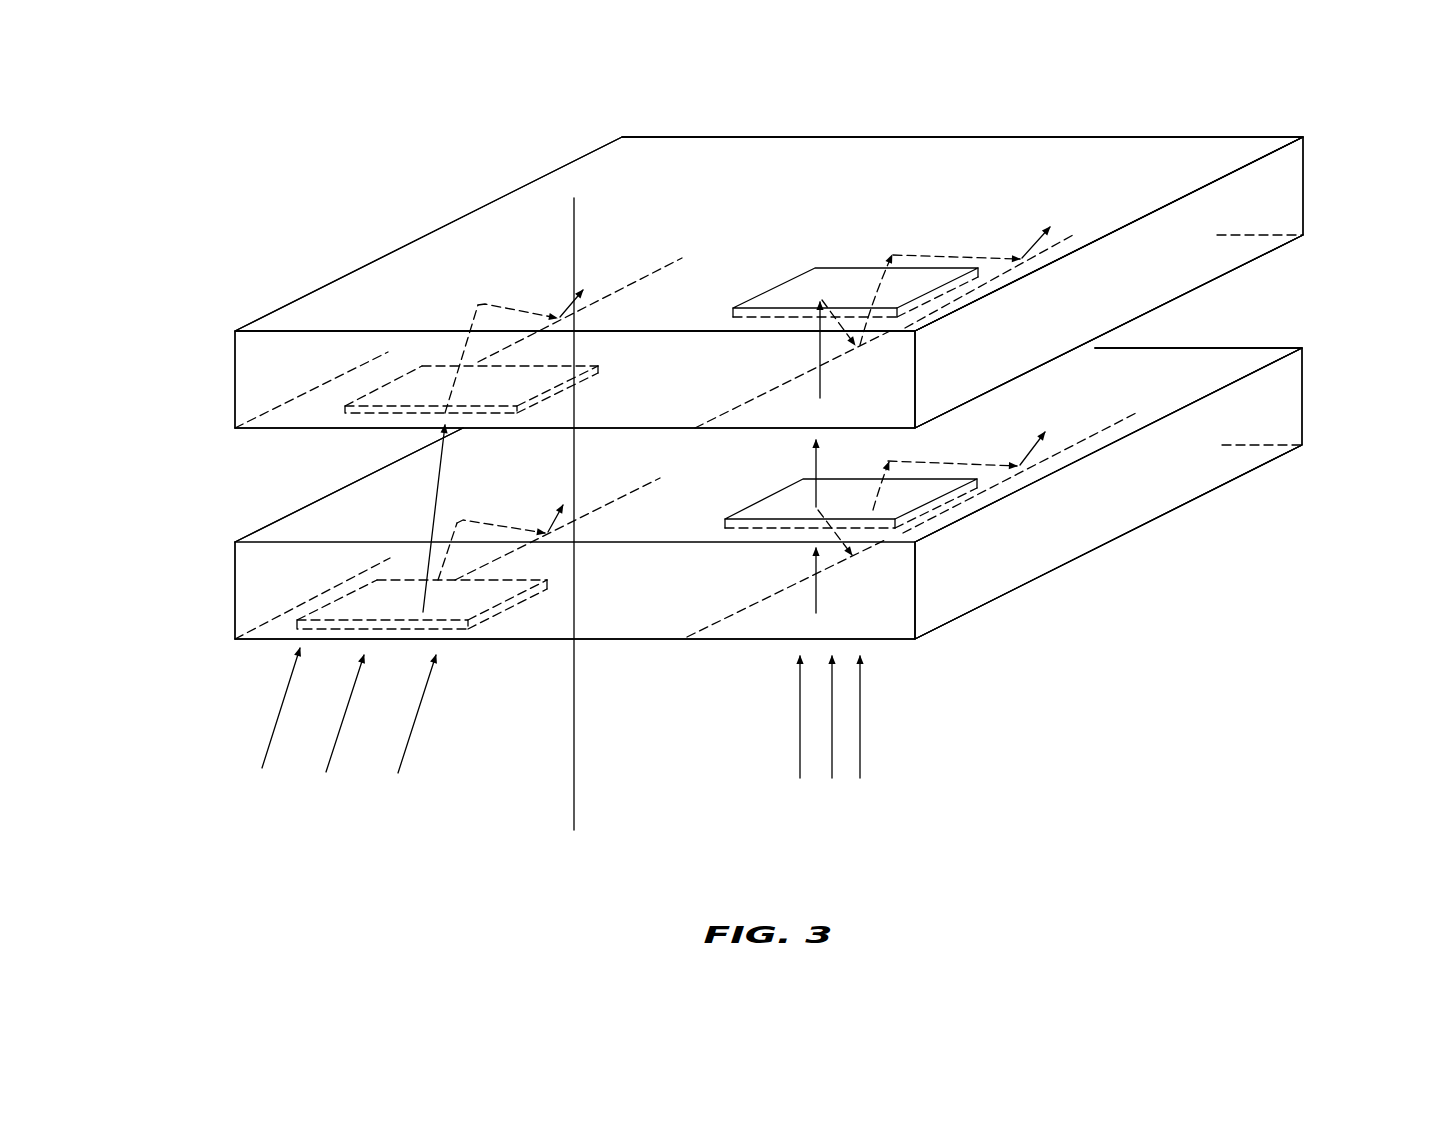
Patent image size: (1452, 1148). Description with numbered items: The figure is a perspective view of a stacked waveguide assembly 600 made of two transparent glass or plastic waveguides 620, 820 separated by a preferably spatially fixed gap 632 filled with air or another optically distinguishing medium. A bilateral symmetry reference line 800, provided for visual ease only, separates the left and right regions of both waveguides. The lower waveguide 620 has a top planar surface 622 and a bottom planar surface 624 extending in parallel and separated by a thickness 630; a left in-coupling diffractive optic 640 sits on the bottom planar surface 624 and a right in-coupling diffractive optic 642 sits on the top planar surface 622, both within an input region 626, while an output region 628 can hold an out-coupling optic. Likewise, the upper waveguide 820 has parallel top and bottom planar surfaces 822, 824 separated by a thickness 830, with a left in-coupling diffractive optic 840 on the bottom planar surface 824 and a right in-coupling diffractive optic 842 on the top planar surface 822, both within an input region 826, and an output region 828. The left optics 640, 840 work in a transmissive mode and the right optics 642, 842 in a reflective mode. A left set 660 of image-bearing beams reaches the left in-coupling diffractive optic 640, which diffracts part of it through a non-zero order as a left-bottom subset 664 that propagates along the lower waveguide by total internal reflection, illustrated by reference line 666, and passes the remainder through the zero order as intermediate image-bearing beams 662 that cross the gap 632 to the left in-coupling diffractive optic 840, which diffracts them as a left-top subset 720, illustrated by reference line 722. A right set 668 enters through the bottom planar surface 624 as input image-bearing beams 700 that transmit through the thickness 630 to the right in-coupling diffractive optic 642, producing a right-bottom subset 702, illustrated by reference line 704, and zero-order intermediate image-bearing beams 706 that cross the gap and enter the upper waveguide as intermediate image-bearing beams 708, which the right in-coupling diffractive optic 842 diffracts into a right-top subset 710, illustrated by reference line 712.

The stacked waveguide assembly 600 is at (808, 92).
The waveguide 620 is at (257, 528).
The top planar surface 622 is at (1075, 465).
The bottom planar surface 624 is at (1063, 567).
The input region 626 is at (292, 502).
The output region 628 is at (1223, 369).
The thickness 630 is at (232, 585).
The gap 632 is at (1313, 293).
The left in-coupling diffractive optic 640 is at (422, 644).
The right in-coupling diffractive optic 642 is at (901, 558).
The left set of image-bearing beams 660 is at (395, 757).
The intermediate image-bearing beams 662 is at (420, 503).
The left-bottom subset of image-bearing light beams 664 is at (495, 520).
The reference line 666 is at (621, 492).
The right set of image-bearing beams 668 is at (802, 770).
The input image-bearing beams 700 is at (756, 580).
The right-bottom subset of image-bearing light beams 702 is at (968, 462).
The reference line 704 is at (1108, 425).
The intermediate image-bearing beams 706 is at (812, 466).
The intermediate image-bearing beams 708 is at (823, 370).
The right-top subset of image-bearing light beams 710 is at (950, 255).
The reference line 712 is at (1067, 237).
The left-top subset of image-bearing light beams 720 is at (520, 310).
The reference line 722 is at (647, 275).
The bilateral symmetry reference line 800 is at (580, 757).
The waveguide 820 is at (435, 228).
The top planar surface 822 is at (1212, 185).
The bottom planar surface 824 is at (1197, 287).
The input region 826 is at (262, 311).
The output region 828 is at (1248, 146).
The thickness 830 is at (235, 380).
The left in-coupling diffractive optic 840 is at (445, 376).
The right in-coupling diffractive optic 842 is at (844, 273).